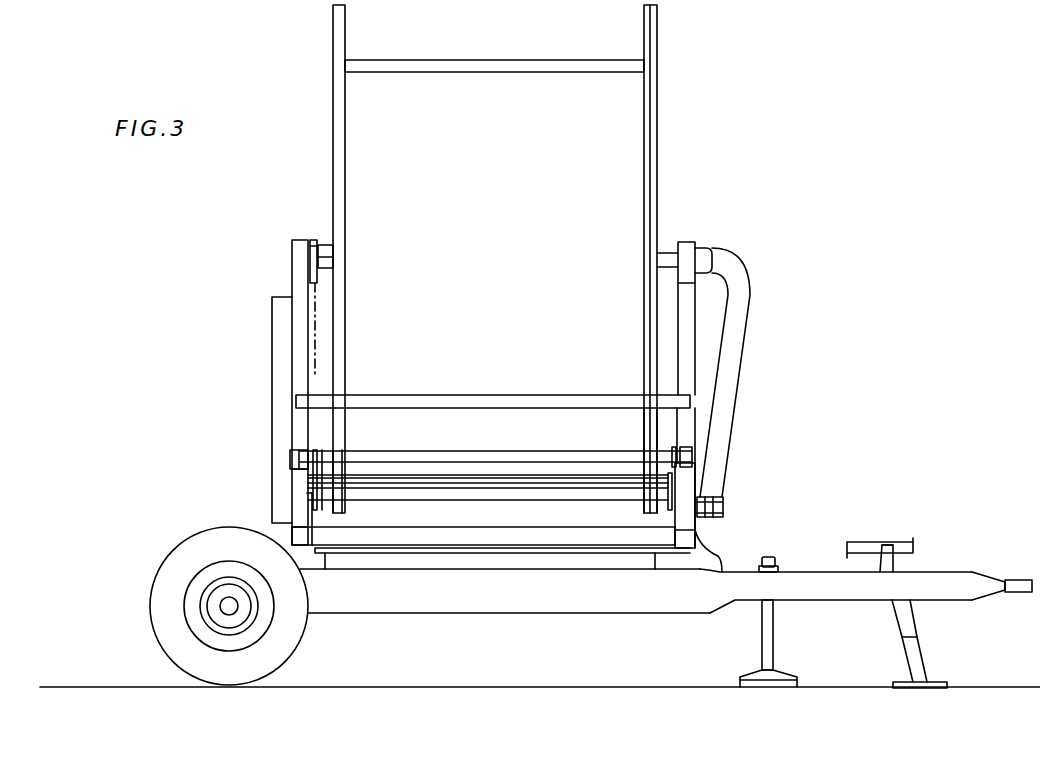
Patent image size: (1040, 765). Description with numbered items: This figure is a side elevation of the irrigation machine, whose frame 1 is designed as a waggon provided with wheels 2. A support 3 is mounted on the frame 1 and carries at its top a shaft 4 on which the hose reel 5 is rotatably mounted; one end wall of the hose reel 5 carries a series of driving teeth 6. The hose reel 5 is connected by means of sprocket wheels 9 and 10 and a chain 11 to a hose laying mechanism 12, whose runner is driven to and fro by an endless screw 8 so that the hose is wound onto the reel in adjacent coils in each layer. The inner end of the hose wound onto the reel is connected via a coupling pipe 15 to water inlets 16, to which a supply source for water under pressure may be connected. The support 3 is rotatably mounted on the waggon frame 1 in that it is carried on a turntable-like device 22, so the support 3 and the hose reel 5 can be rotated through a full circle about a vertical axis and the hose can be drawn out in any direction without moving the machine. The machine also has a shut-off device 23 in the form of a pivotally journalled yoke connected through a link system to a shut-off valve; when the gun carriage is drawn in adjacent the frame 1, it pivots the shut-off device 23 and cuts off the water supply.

The frame 1 is at (705, 565).
The wheels 2 is at (150, 600).
The support 3 is at (273, 322).
The shaft 4 is at (323, 257).
The hose reel 5 is at (660, 130).
The driving teeth 6 is at (657, 82).
The endless screw 8 is at (402, 462).
The sprocket wheel 9 is at (317, 240).
The sprocket wheel 10 is at (322, 450).
The chain 11 is at (318, 347).
The hose laying mechanism 12 is at (340, 400).
The coupling pipe 15 is at (692, 242).
The water inlets 16 is at (722, 494).
The turntable-like device 22 is at (395, 556).
The shut-off device 23 is at (537, 478).